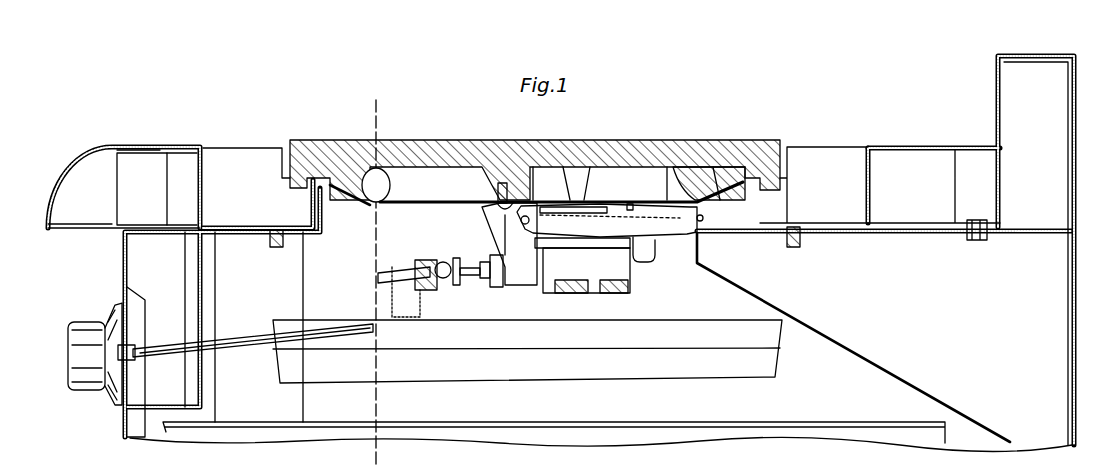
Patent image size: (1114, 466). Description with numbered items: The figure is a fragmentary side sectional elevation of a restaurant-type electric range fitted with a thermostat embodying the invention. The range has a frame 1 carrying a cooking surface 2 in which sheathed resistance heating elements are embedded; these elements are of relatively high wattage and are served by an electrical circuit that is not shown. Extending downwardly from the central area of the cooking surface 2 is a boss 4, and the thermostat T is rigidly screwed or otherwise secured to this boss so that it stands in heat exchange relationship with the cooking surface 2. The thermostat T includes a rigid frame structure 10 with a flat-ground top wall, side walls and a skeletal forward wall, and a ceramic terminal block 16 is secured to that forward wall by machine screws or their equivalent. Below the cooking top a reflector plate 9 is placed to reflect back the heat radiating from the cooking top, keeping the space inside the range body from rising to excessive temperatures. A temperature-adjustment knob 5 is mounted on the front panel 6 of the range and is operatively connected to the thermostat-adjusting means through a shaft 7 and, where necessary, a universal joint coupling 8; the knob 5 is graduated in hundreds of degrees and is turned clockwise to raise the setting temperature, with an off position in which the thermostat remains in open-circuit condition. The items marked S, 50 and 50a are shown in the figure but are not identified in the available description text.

The frame 1 is at (988, 341).
The cooking surface 2 is at (648, 150).
The boss 4 is at (505, 182).
The spring plate S is at (508, 206).
The reflector plate 9 is at (660, 200).
The universal joint coupling 8 is at (440, 262).
The rigid frame structure 10 is at (522, 253).
The ceramic terminal block 16 is at (590, 276).
The foot 50a is at (572, 294).
The foot 50 is at (606, 294).
The thermostat T is at (678, 240).
The front panel 6 is at (125, 268).
The shaft 7 is at (256, 342).
The temperature-adjustment knob 5 is at (115, 396).